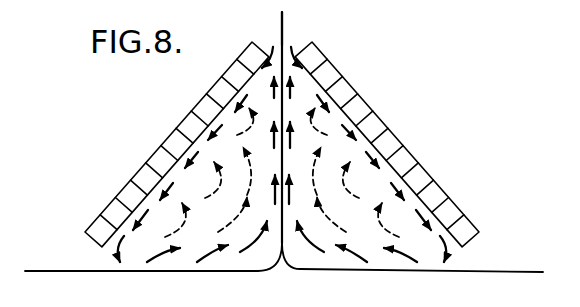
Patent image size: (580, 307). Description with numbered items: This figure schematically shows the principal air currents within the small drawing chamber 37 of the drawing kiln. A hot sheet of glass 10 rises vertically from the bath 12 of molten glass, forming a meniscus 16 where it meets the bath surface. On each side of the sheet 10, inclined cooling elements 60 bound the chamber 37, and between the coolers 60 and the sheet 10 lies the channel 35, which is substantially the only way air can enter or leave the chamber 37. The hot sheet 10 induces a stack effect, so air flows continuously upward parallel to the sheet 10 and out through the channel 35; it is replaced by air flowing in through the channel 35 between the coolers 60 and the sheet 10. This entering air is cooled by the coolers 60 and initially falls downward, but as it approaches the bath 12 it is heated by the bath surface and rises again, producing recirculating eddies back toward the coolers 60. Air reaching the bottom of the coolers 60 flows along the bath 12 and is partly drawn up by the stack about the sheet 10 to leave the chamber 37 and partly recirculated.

The sheet of glass 10 is at (283, 14).
The channel 35 is at (282, 35).
The cooling elements 60 is at (220, 90).
The drawing chamber 37 is at (202, 185).
The meniscus 16 is at (292, 263).
The bath of molten glass 12 is at (492, 272).